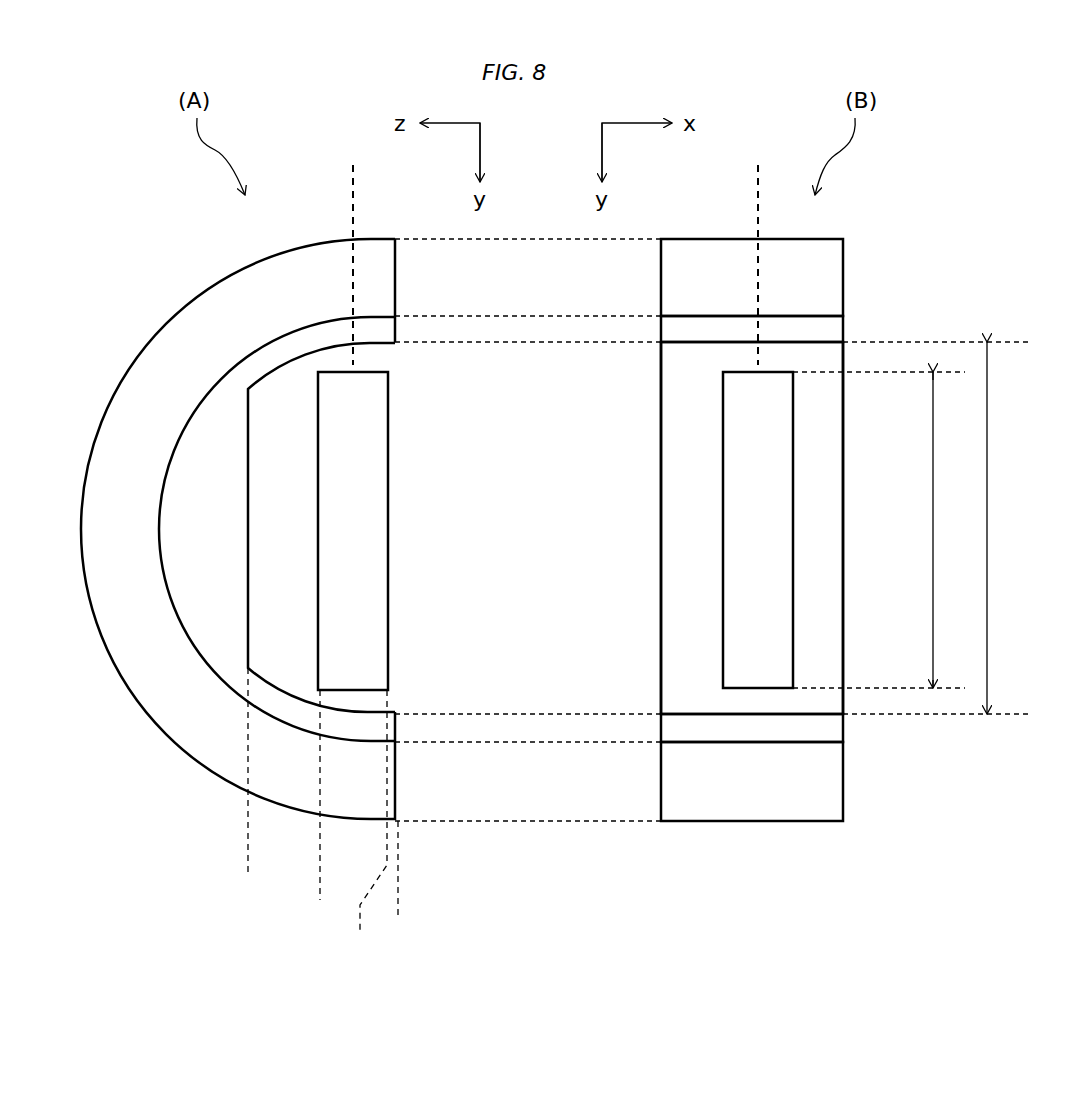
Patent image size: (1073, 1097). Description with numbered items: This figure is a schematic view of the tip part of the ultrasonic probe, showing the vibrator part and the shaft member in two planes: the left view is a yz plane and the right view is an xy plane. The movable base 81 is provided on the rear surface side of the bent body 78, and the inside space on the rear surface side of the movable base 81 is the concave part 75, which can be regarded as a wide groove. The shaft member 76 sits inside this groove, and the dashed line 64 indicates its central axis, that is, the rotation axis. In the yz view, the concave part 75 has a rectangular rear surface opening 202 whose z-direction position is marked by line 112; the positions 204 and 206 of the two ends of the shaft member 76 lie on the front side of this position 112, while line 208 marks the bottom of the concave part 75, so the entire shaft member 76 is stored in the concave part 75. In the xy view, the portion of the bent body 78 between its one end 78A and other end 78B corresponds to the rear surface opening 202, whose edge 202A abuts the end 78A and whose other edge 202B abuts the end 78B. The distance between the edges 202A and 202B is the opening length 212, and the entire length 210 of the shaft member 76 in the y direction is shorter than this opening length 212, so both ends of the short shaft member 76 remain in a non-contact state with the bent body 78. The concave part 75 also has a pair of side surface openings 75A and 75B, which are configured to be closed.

The central axis 64 is at (557, 251).
The concave part 75 is at (812, 467).
The side surface opening 75A is at (661, 565).
The side surface opening 75B is at (843, 568).
The shaft member 76 is at (390, 530).
The bent body 78 is at (200, 330).
The one end of bent body 78A is at (752, 277).
The other end of bent body 78B is at (752, 781).
The movable base 81 is at (200, 625).
The position of rear surface opening 112 is at (403, 888).
The rear surface opening 202 is at (395, 345).
The one edge of rear surface opening 202A is at (693, 343).
The other edge of rear surface opening 202B is at (700, 714).
The position of one shaft end 204 is at (318, 809).
The position of other shaft end 206 is at (361, 827).
The bottom position of concave part 208 is at (246, 788).
The entire length of shaft member 210 is at (956, 530).
The opening length 212 is at (1013, 528).